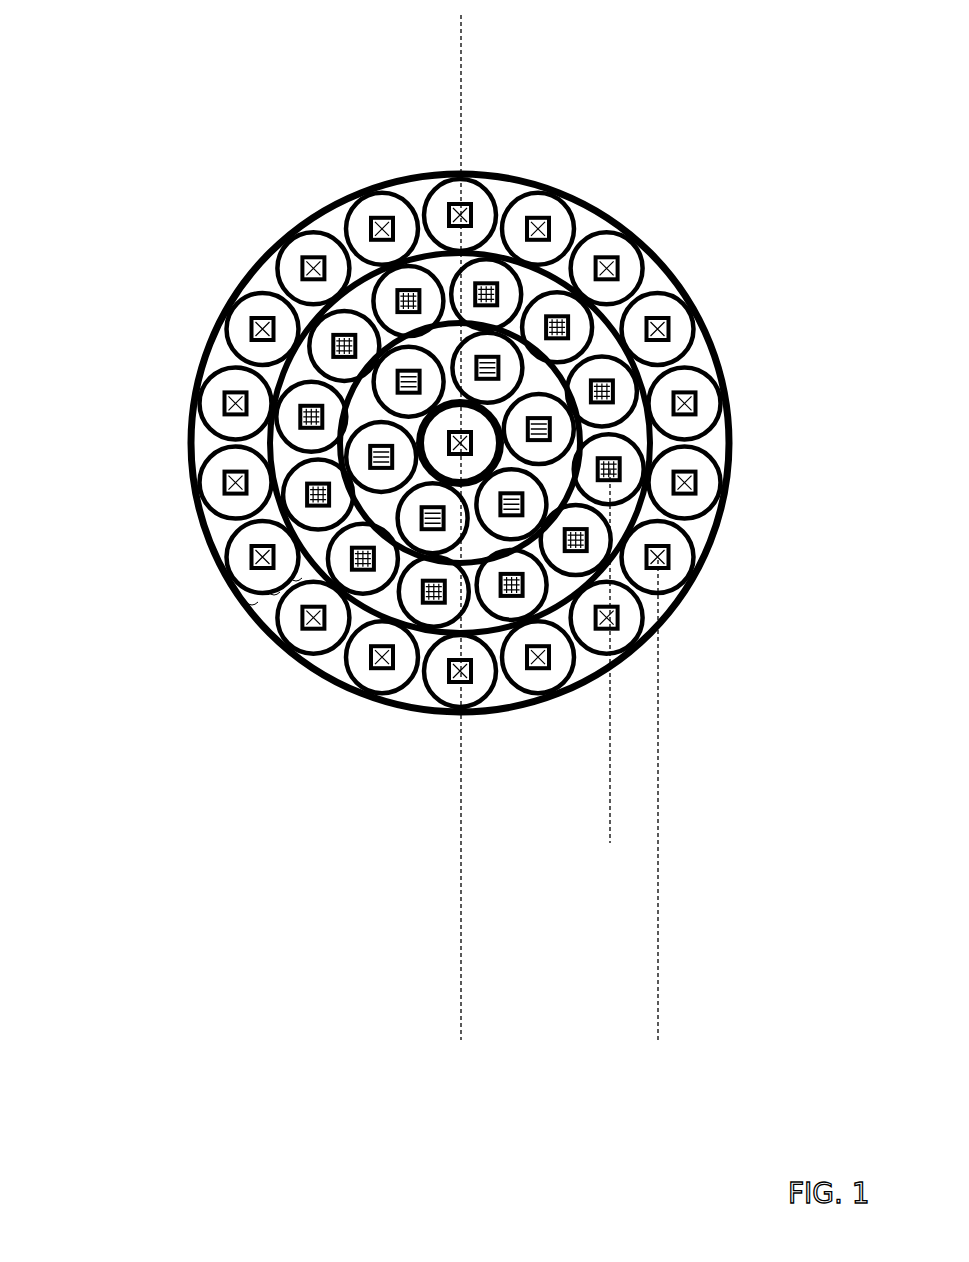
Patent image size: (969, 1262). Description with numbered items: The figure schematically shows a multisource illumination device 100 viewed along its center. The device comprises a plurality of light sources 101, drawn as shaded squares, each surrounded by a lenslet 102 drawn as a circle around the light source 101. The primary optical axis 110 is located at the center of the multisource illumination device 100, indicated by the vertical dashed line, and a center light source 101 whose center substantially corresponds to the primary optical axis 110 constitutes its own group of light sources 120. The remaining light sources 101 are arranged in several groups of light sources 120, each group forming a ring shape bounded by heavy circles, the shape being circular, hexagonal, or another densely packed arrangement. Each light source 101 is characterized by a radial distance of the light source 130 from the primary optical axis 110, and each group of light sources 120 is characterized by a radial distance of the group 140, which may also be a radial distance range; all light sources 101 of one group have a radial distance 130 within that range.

The multisource illumination device 100 is at (717, 133).
The primary optical axis 110 is at (440, 433).
The group of light sources 120 is at (473, 418).
The light source 101 is at (217, 420).
The lenslet 102 is at (297, 567).
The radial distance of the light source 130 is at (610, 823).
The radial distance of the group 140 is at (658, 985).